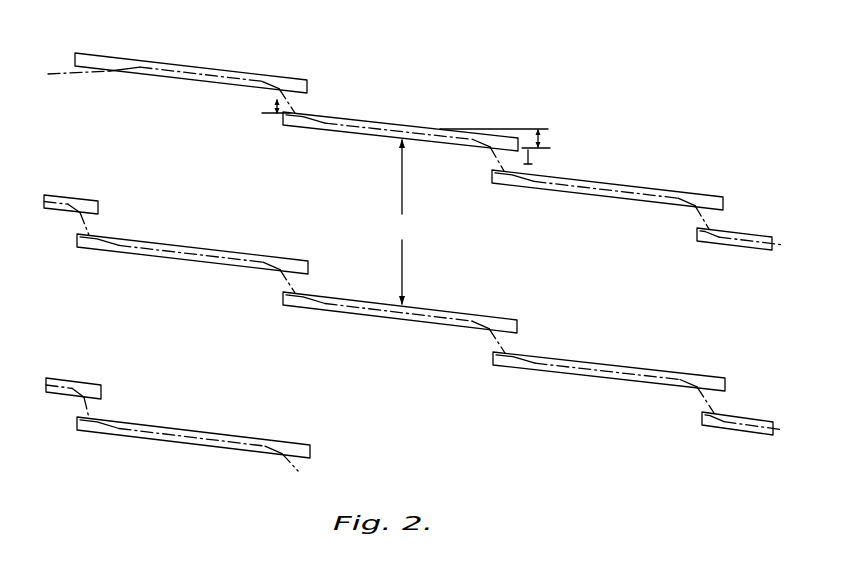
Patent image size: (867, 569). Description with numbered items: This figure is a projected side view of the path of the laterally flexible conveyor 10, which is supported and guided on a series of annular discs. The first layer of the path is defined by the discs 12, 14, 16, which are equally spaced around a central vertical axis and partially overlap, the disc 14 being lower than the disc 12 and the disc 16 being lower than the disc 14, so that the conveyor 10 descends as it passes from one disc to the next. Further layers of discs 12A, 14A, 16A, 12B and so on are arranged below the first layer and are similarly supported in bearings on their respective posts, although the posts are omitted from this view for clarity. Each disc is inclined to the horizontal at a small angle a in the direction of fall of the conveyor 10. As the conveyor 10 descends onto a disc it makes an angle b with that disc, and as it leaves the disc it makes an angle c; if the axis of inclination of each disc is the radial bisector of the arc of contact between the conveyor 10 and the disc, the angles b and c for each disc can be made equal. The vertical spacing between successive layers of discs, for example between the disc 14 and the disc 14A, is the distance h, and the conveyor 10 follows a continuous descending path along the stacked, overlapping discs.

The conveyor 10 is at (93, 77).
The disc 12 is at (115, 60).
The disc 14 is at (383, 119).
The disc 16 is at (660, 190).
The disc 12A is at (707, 240).
The disc 14A is at (350, 308).
The disc 16A is at (612, 368).
The disc 12B is at (183, 428).
The angle of inclination a is at (543, 135).
The descent angle b is at (274, 114).
The departure angle c is at (533, 157).
The vertical spacing h is at (402, 222).